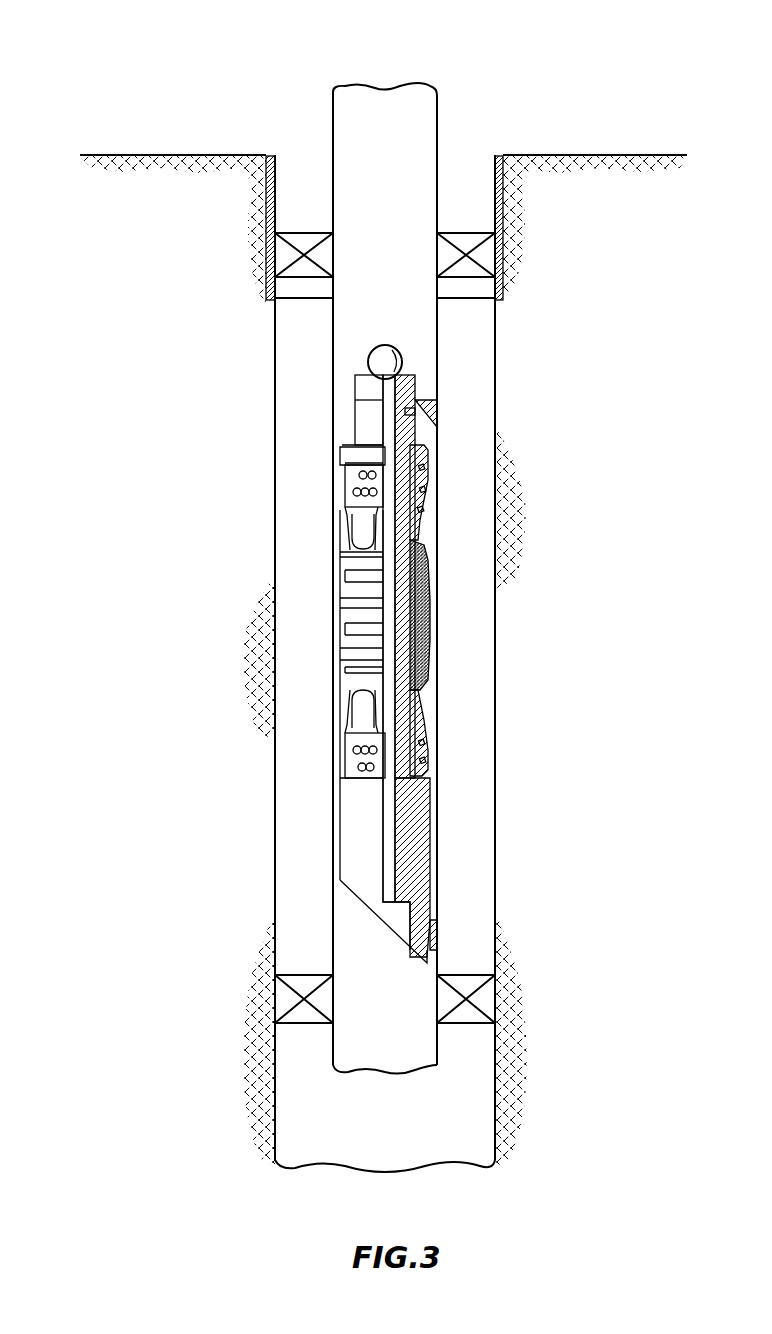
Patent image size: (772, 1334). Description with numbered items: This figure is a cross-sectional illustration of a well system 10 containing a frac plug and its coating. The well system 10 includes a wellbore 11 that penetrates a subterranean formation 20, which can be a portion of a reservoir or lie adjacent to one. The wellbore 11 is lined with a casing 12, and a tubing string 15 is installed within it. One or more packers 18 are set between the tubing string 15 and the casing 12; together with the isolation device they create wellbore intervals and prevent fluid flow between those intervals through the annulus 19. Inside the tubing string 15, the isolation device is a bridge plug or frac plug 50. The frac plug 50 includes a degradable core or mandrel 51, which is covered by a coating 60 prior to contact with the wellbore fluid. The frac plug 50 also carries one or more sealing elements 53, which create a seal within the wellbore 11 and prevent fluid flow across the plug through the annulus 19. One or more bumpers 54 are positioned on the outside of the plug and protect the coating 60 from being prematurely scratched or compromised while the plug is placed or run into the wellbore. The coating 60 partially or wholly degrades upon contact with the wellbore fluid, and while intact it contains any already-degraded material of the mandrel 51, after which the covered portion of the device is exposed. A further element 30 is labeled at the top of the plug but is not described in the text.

The well system 10 is at (84, 74).
The wellbore 11 is at (497, 380).
The casing 12 is at (265, 217).
The tubing string 15 is at (437, 335).
The packers 18 is at (282, 255).
The annulus 19 is at (297, 782).
The subterranean formation 20 is at (686, 216).
The ball 30 is at (370, 357).
The bridge plug or frac plug 50 is at (338, 457).
The degradable core or mandrel 51 is at (430, 812).
The sealing elements 53 is at (428, 623).
The bumpers 54 is at (437, 418).
The coating 60 is at (437, 860).